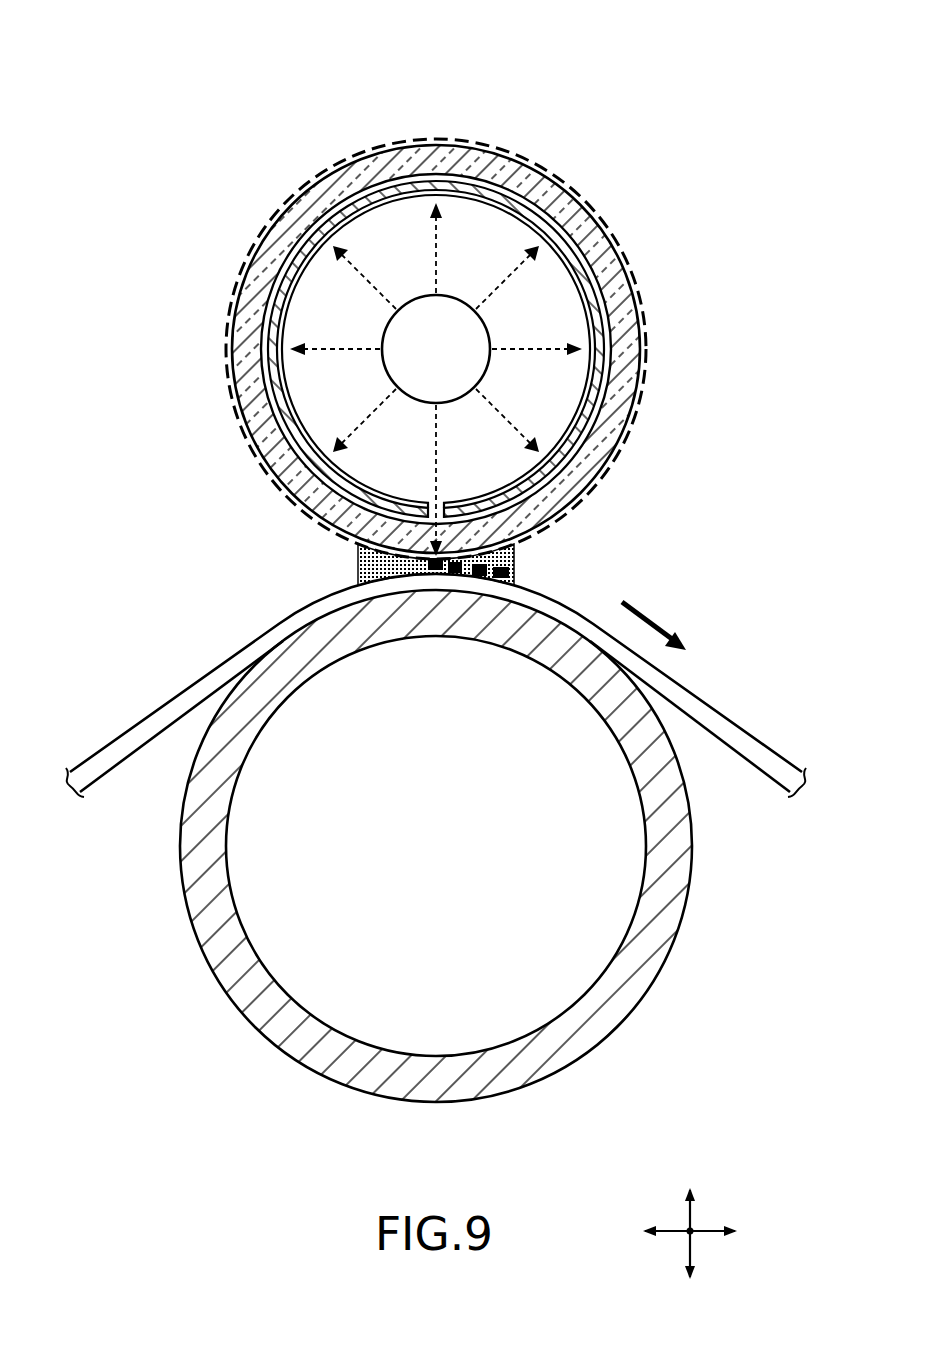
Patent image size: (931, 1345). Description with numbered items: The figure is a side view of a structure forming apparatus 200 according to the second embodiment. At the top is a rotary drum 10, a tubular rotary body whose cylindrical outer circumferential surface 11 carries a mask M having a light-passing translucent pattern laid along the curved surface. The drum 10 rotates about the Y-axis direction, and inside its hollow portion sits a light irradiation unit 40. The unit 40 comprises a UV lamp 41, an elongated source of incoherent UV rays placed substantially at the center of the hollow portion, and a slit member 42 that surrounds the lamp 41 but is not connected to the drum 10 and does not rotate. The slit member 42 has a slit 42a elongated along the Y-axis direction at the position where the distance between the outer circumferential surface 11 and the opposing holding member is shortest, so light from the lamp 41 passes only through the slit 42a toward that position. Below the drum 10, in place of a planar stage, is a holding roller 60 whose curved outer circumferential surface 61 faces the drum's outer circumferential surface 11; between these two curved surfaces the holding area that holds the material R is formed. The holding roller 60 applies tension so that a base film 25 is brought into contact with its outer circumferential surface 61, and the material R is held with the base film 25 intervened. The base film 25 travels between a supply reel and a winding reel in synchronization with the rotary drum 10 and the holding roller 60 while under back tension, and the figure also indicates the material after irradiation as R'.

The structure forming apparatus 200 is at (186, 98).
The rotary drum 10 is at (413, 144).
The outer circumferential surface 11 is at (569, 509).
The mask M is at (341, 161).
The light irradiation unit 40 is at (167, 298).
The UV lamp 41 is at (402, 331).
The slit member 42 is at (276, 368).
The slit 42a is at (430, 505).
The holding roller 60 is at (657, 936).
The outer circumferential surface 61 is at (350, 598).
The base film 25 is at (748, 746).
The material R is at (417, 628).
The fixed toner image R' is at (468, 630).